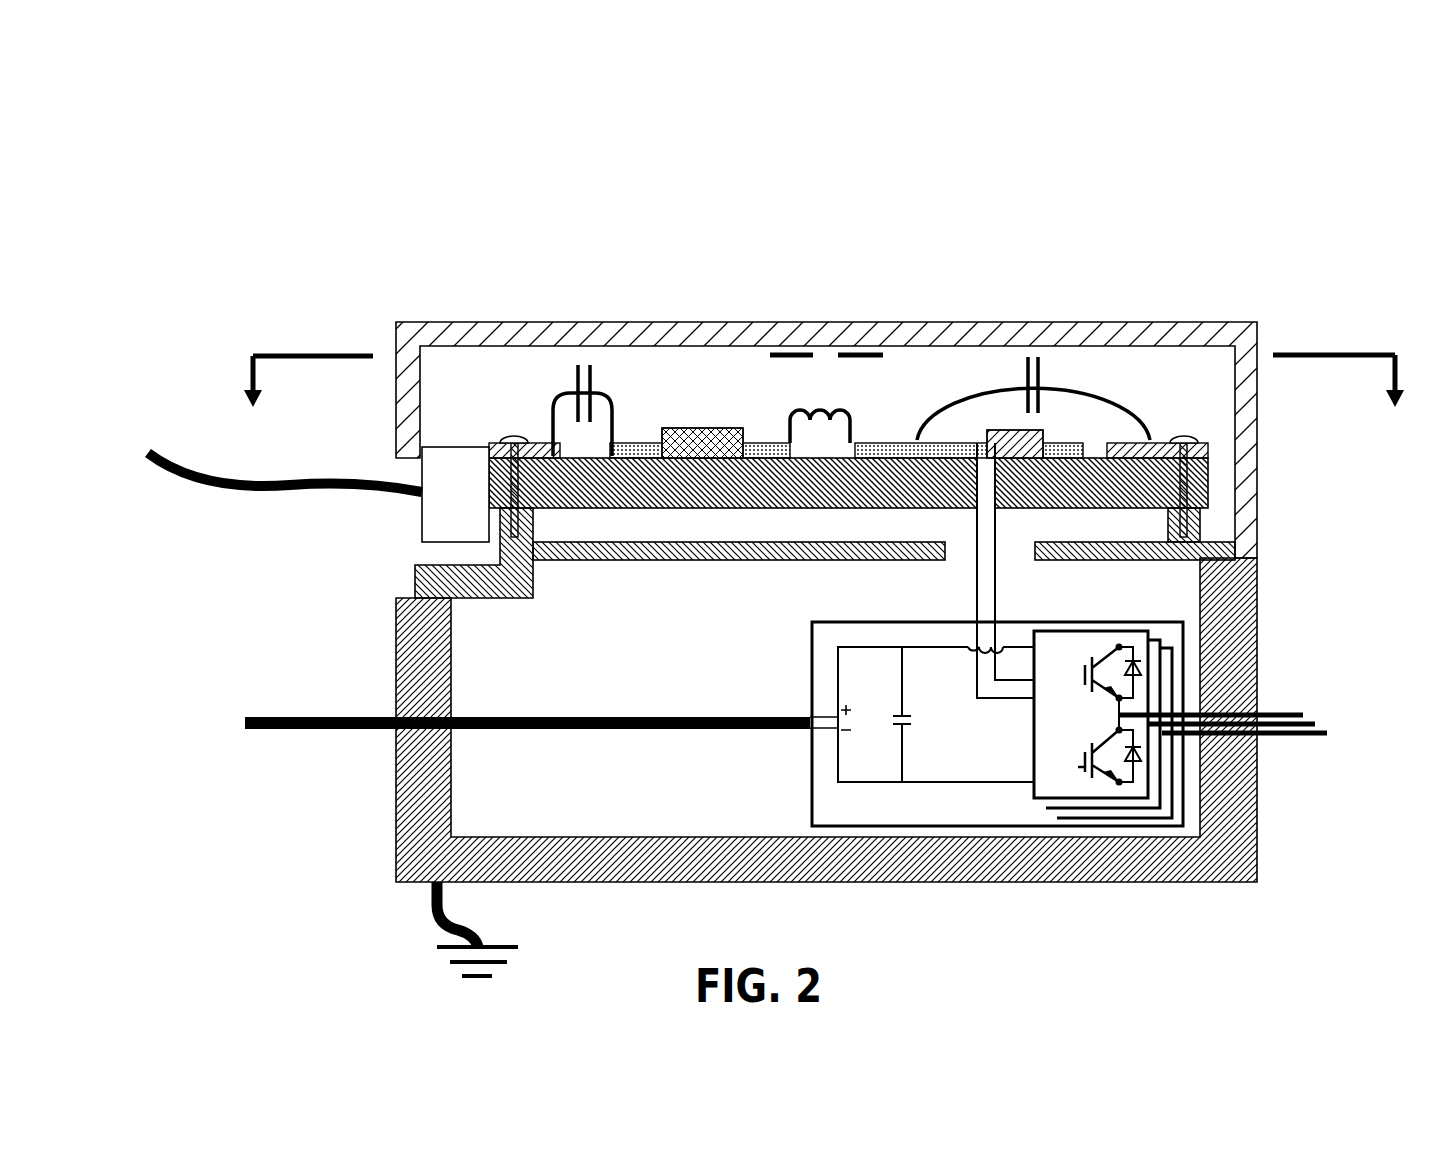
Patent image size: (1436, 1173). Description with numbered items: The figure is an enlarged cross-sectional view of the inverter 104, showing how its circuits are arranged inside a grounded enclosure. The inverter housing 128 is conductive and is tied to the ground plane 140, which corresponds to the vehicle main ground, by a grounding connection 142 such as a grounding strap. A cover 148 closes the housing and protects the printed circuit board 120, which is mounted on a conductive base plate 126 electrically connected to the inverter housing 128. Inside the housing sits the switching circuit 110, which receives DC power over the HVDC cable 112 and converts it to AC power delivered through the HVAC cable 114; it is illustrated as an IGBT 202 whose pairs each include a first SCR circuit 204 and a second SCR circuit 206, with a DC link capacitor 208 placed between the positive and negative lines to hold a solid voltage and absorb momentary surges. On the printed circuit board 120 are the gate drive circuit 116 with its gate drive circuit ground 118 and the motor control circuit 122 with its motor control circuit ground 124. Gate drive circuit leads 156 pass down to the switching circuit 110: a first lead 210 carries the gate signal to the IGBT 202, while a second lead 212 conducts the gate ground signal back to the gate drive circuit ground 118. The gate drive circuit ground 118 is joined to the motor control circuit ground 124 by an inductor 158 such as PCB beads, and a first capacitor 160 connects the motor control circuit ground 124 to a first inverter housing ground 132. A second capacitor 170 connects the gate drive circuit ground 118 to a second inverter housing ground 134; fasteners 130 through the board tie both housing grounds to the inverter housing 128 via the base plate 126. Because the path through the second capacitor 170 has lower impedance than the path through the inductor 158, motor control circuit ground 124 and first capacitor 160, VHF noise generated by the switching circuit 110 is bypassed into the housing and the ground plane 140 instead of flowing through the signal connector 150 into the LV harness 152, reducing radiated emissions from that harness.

The inverter 104 is at (120, 128).
The switching circuit 110 is at (1010, 810).
The high voltage DC (HVDC) cable 112 is at (308, 732).
The high-voltage AC (HVAC) cable 114 is at (1278, 712).
The gate drive circuit 116 is at (1045, 437).
The gate drive circuit ground 118 is at (945, 445).
The printed circuit board 120 is at (1215, 477).
The motor control circuit 122 is at (738, 430).
The motor control circuit ground 124 is at (632, 443).
The base plate 126 is at (415, 578).
The inverter housing 128 is at (1258, 870).
The fasteners 130 is at (498, 437).
The first inverter housing ground 132 is at (550, 443).
The second inverter housing ground 134 is at (1210, 446).
The ground plane 140 is at (424, 968).
The grounding connection 142 is at (432, 910).
The cover 148 is at (1258, 322).
The signal connector 150 is at (418, 524).
The low voltage (LV) harness 152 is at (255, 492).
The gate drive circuit leads 156 is at (1006, 540).
The inductor 158 is at (815, 408).
The first capacitor 160 is at (578, 362).
The second capacitor 170 is at (1030, 430).
The IGBT 202 is at (1170, 636).
The first SCR circuit 204 is at (1149, 669).
The second SCR circuit 206 is at (1149, 757).
The capacitor 208 is at (915, 732).
The first lead 210 is at (996, 606).
The second lead 212 is at (975, 606).